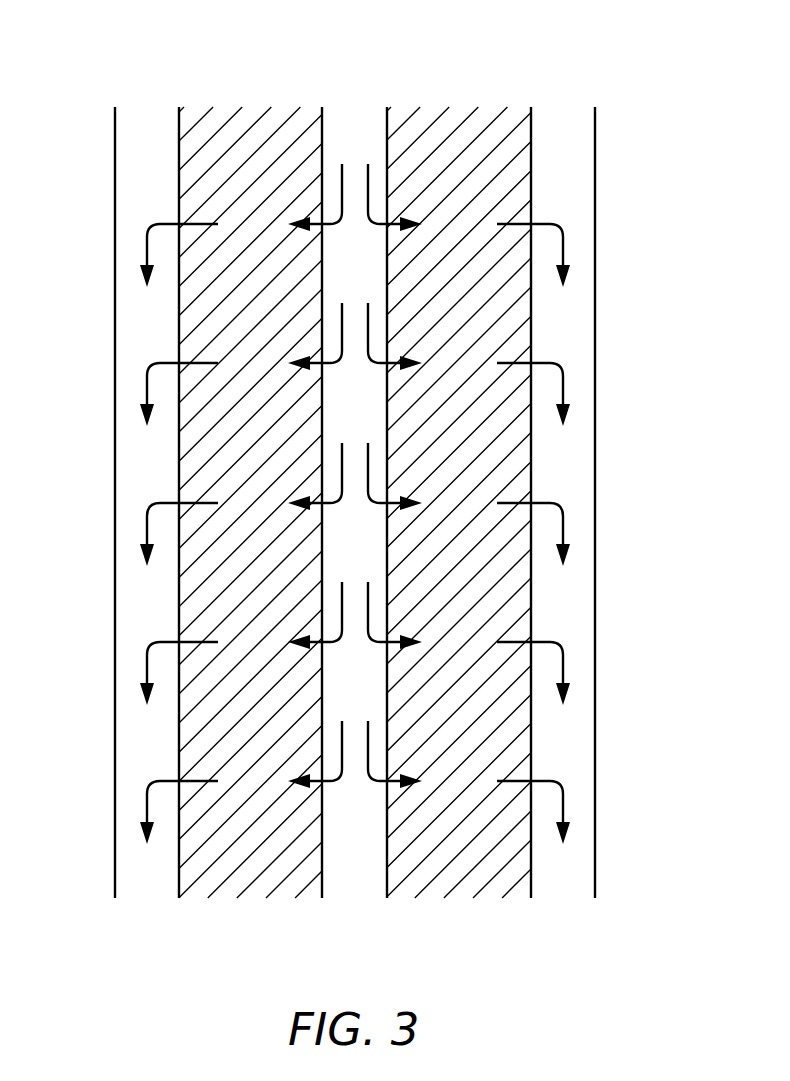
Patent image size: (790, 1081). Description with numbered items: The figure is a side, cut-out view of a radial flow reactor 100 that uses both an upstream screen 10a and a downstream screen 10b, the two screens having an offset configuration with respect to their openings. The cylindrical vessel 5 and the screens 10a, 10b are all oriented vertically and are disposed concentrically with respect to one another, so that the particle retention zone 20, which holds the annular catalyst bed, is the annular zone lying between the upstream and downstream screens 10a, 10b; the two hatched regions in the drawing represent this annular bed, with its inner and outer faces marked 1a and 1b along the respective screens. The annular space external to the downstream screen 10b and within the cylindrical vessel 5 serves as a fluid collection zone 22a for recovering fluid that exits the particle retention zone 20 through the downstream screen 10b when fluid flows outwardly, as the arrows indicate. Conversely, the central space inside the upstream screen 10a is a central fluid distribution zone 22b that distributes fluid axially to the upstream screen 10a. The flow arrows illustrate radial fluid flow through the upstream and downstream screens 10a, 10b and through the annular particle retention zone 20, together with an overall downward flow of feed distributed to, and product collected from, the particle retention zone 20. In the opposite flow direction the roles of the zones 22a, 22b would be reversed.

The radial flow reactor 100 is at (662, 57).
The cylindrical vessel 5 is at (596, 310).
The first porous member 1a is at (179, 137).
The second porous member 1b is at (388, 137).
The particle retention zone 20 is at (326, 502).
The upstream screen 10a is at (323, 113).
The downstream screen 10b is at (178, 113).
The fluid collection zone 22a is at (145, 323).
The central fluid distribution zone 22b is at (354, 882).